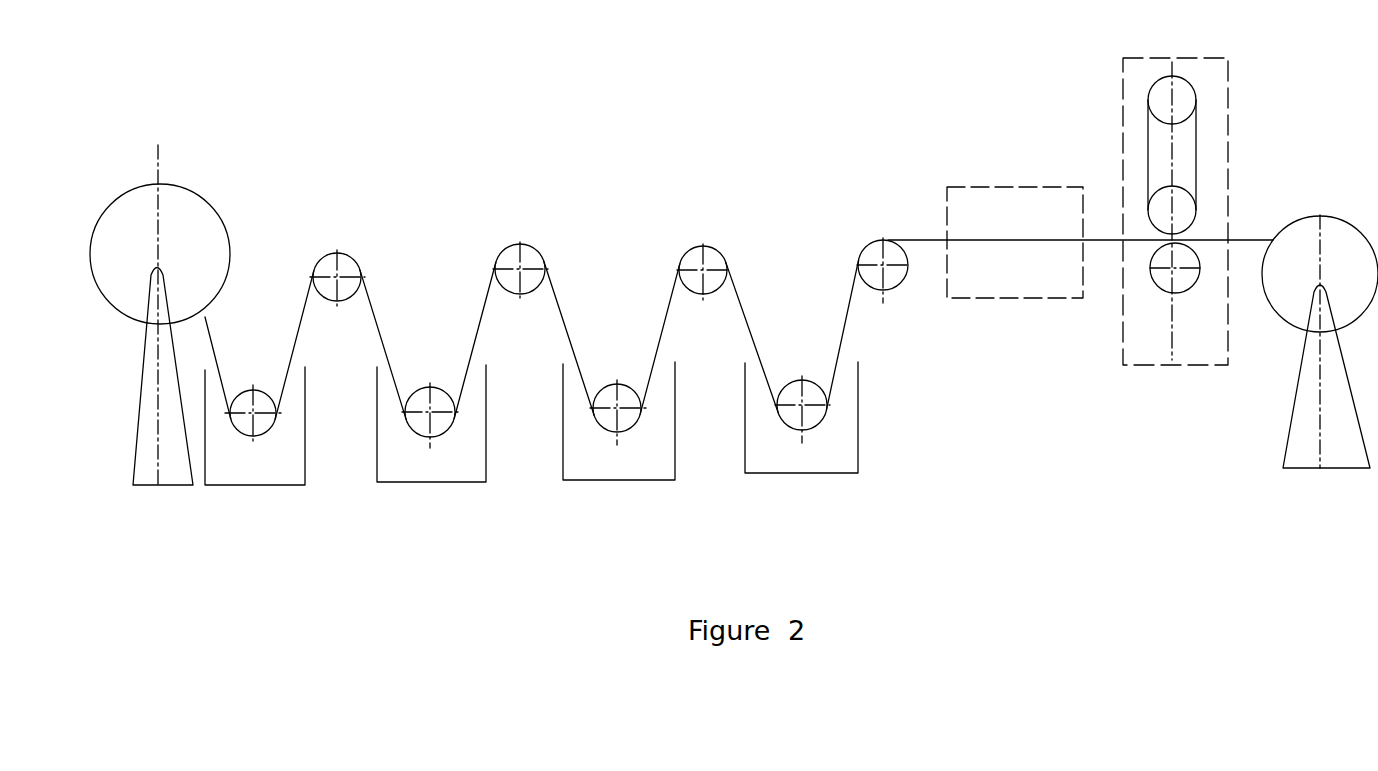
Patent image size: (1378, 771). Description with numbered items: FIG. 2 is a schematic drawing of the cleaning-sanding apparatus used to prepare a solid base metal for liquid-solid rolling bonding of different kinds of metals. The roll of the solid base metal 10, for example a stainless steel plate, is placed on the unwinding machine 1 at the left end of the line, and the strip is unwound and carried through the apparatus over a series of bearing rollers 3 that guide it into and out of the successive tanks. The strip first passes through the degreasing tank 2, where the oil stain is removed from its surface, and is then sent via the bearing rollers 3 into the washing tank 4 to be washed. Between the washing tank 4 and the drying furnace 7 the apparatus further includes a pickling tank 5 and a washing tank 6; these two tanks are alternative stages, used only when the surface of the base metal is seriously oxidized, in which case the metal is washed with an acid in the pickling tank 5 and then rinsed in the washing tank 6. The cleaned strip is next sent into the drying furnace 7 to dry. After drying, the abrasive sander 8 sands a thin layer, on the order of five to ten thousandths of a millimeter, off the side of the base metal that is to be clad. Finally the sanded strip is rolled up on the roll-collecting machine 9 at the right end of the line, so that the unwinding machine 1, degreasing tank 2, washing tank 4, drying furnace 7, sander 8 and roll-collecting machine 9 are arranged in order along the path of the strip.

The unwinding machine 1 is at (122, 228).
The degreasing tank 2 is at (218, 435).
The bearing rollers 3 is at (327, 282).
The washing tank 4 is at (392, 400).
The pickling tank 5 is at (663, 398).
The washing tank 6 is at (848, 398).
The drying furnace 7 is at (992, 210).
The sander 8 is at (1168, 163).
The roll-collecting machine 9 is at (1348, 257).
The roll of the solid base metal 10 is at (1113, 240).